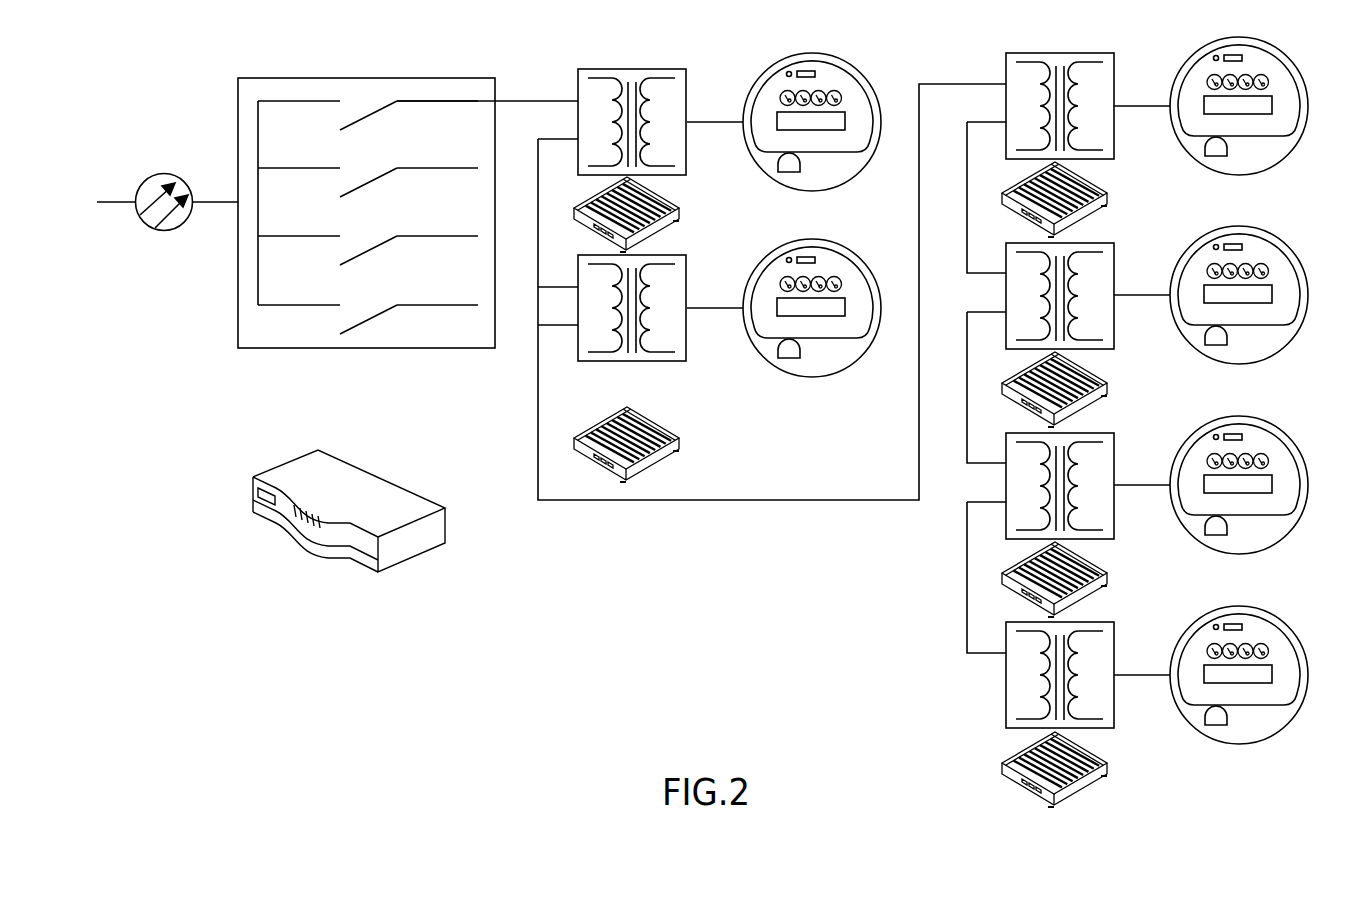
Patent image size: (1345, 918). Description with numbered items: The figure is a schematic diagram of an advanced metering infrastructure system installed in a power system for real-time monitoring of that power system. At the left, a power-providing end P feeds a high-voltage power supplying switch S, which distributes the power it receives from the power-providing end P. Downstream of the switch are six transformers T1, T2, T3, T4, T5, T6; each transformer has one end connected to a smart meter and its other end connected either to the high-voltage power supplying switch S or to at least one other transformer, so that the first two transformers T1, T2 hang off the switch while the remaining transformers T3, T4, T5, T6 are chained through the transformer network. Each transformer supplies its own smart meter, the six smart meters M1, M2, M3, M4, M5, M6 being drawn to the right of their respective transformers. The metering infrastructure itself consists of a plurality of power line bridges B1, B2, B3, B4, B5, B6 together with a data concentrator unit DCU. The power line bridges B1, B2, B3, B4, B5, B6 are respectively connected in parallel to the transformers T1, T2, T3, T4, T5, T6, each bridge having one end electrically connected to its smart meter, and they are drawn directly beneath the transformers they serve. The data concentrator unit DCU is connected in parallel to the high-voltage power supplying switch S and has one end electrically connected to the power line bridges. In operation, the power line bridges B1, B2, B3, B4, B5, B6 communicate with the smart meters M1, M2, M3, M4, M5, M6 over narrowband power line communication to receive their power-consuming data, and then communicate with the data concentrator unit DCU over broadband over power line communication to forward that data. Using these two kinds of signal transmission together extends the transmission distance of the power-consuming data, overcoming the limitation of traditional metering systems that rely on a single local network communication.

The power-providing end P is at (163, 231).
The high-voltage power supplying switch S is at (365, 349).
The data concentrator unit DCU is at (308, 558).
The transformer T1 is at (632, 105).
The transformer T2 is at (632, 327).
The transformer T3 is at (1079, 104).
The transformer T4 is at (1079, 294).
The transformer T5 is at (1079, 484).
The transformer T6 is at (1079, 673).
The smart meter M1 is at (812, 136).
The smart meter M2 is at (812, 321).
The smart meter M3 is at (1239, 119).
The smart meter M4 is at (1239, 308).
The smart meter M5 is at (1239, 498).
The smart meter M6 is at (1239, 688).
The power line bridge B1 is at (646, 214).
The power line bridge B2 is at (646, 444).
The power line bridge B3 is at (1074, 199).
The power line bridge B4 is at (1074, 389).
The power line bridge B5 is at (1074, 579).
The power line bridge B6 is at (1074, 769).